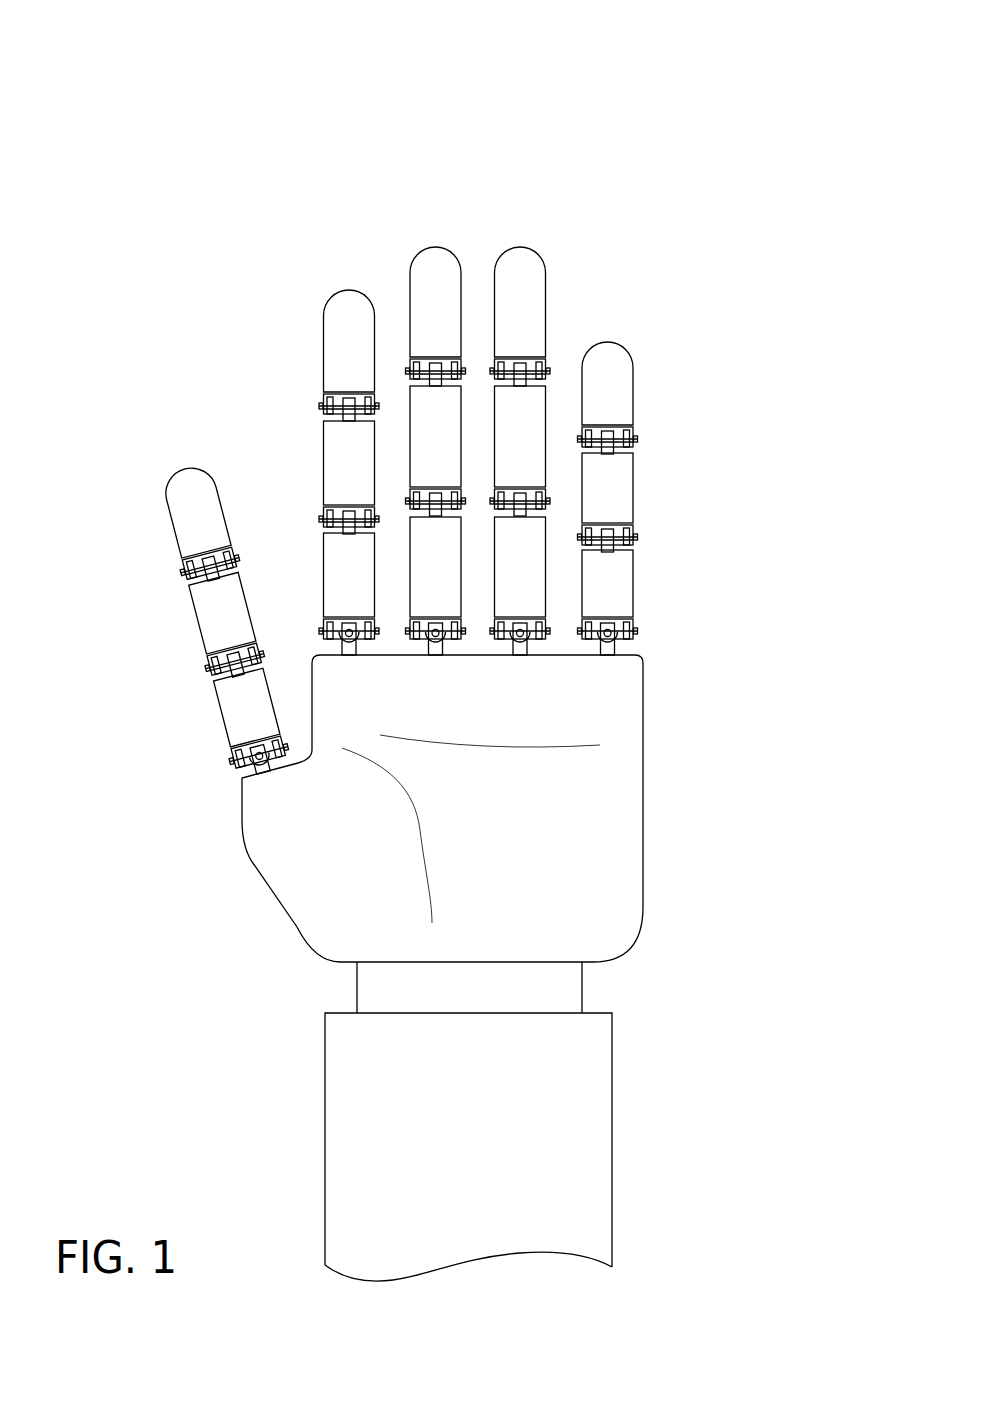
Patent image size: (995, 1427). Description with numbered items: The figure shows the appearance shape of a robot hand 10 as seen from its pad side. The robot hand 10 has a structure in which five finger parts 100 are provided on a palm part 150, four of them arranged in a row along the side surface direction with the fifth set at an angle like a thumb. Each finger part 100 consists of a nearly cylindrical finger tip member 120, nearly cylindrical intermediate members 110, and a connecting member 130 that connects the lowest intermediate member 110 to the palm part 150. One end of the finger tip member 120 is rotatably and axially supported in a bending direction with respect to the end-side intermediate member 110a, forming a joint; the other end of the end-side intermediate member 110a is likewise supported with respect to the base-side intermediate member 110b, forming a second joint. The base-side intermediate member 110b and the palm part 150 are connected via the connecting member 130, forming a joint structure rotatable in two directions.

The robot hand 10 is at (169, 82).
The finger part 100 is at (326, 251).
The intermediate member 110 is at (432, 548).
The end-side intermediate member 110a is at (322, 432).
The base-side intermediate member 110b is at (323, 552).
The finger tip member 120 is at (322, 318).
The connecting member 130 is at (332, 607).
The palm part 150 is at (645, 712).